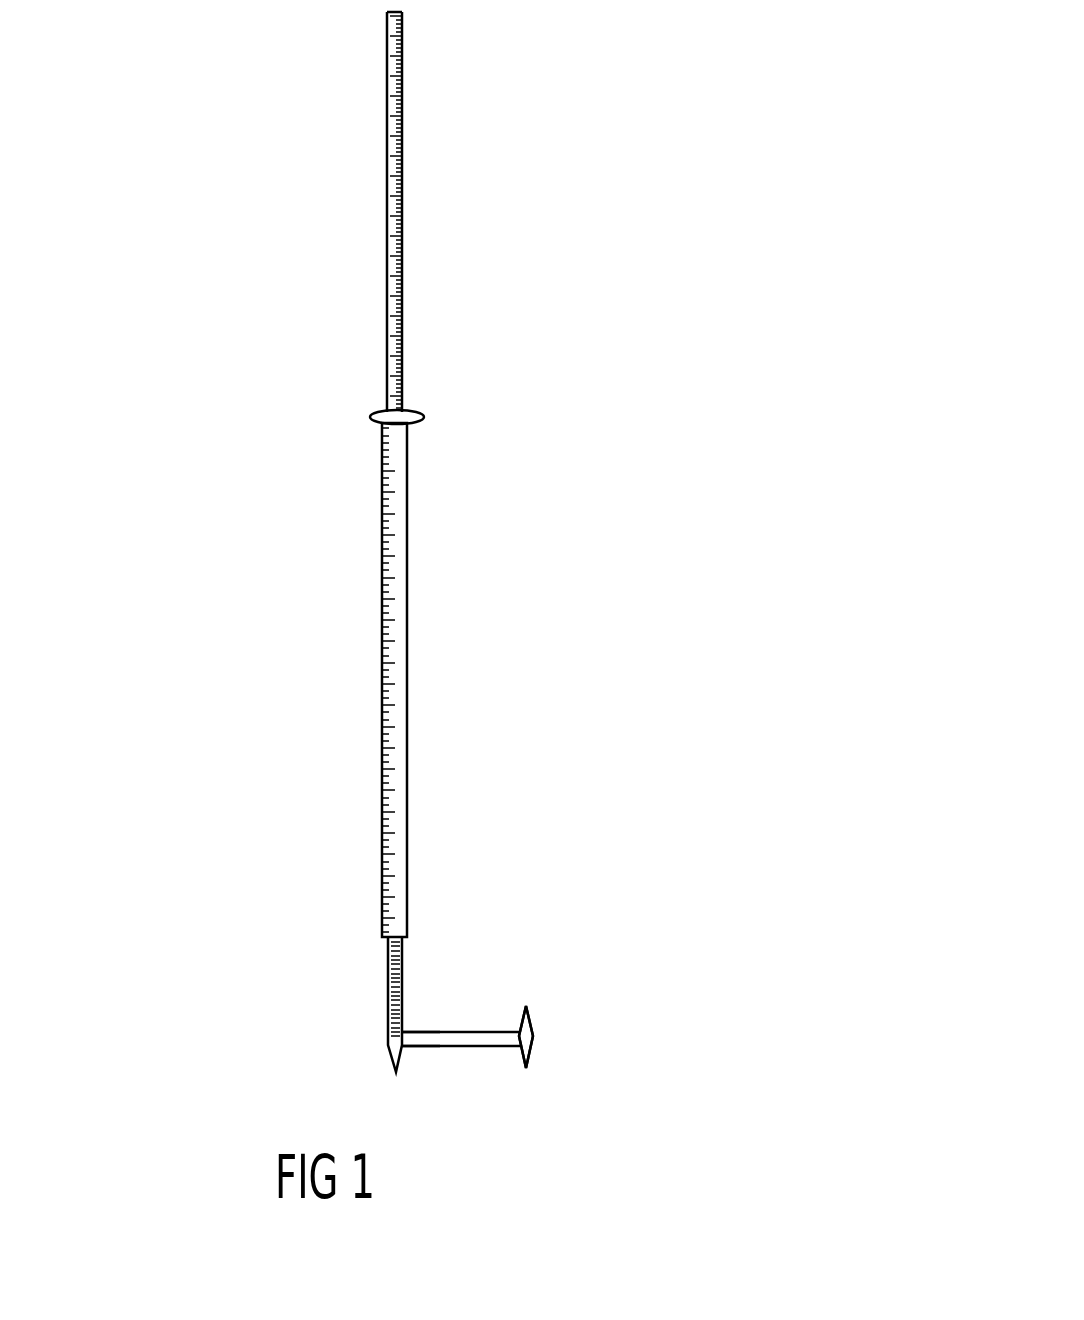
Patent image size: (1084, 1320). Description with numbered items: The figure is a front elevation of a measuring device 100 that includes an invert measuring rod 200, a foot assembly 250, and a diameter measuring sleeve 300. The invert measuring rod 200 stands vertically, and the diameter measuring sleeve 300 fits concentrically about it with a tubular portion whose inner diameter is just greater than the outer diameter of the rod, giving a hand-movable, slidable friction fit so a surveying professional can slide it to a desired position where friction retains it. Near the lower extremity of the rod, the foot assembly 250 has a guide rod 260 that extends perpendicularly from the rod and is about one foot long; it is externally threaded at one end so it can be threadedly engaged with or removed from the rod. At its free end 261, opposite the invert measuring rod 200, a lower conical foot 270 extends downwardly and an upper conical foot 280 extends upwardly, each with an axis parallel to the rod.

The measuring device 100 is at (460, 538).
The invert measuring rod 200 is at (386, 158).
The diameter measuring sleeve 300 is at (383, 624).
The foot assembly 250 is at (477, 1075).
The guide rod 260 is at (427, 1032).
The free end 261 is at (533, 1030).
The upper conical foot 280 is at (528, 1010).
The lower conical foot 270 is at (528, 1063).